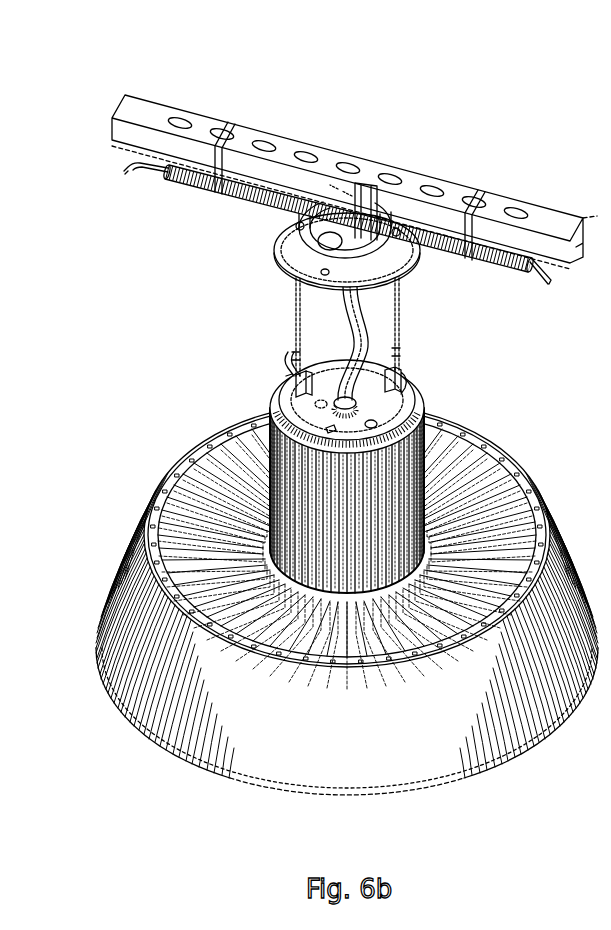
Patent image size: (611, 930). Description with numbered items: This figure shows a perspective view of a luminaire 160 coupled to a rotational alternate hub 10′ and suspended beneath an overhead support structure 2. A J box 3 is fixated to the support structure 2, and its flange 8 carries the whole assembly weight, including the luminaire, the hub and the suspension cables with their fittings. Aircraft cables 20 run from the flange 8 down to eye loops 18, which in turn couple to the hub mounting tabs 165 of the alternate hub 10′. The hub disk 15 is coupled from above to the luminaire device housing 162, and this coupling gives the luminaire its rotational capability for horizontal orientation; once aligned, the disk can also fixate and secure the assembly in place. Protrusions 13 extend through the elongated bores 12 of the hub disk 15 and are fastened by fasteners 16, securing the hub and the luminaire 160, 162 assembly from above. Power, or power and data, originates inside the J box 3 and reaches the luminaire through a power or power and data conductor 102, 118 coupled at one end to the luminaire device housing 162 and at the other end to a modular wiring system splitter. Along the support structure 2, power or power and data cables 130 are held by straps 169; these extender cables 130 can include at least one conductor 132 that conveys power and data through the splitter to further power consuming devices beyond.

The support structure 2 is at (156, 115).
The J box 3 is at (326, 207).
The straps 169 is at (471, 205).
The conductor 132 is at (141, 172).
The power or power and data cables 130 is at (195, 183).
The power cable 102 is at (448, 342).
The power or power and data conductor 118 is at (352, 310).
The aircraft cables 20 is at (295, 303).
The flange 8 is at (306, 268).
The elongated bores 12 is at (367, 375).
The eye loops 18 is at (290, 362).
The protrusions 13 is at (448, 368).
The fasteners 16 is at (392, 378).
The hub mounting tabs 165 is at (300, 387).
The rotational alternate hub 10′ is at (230, 500).
The hub disk 15 is at (230, 500).
The luminaire 160 is at (230, 502).
The luminaire device housing 162 is at (290, 421).